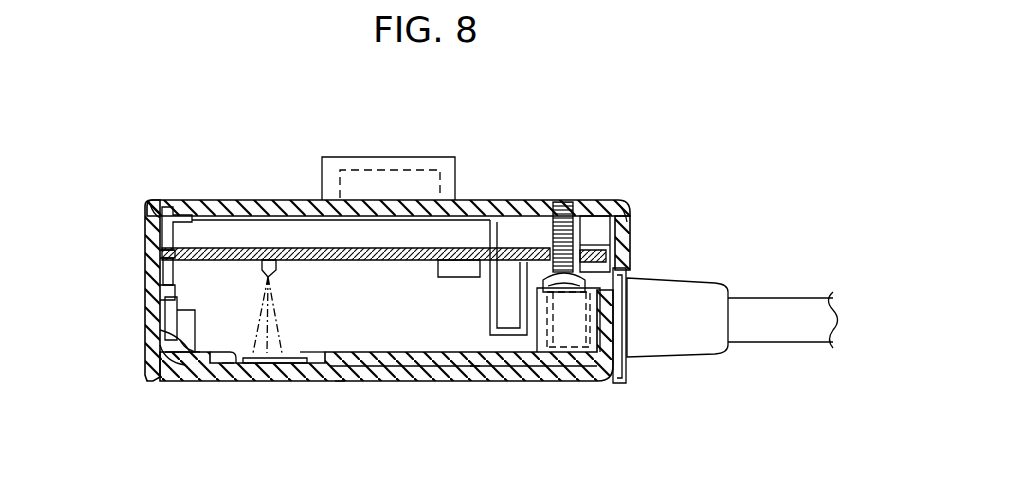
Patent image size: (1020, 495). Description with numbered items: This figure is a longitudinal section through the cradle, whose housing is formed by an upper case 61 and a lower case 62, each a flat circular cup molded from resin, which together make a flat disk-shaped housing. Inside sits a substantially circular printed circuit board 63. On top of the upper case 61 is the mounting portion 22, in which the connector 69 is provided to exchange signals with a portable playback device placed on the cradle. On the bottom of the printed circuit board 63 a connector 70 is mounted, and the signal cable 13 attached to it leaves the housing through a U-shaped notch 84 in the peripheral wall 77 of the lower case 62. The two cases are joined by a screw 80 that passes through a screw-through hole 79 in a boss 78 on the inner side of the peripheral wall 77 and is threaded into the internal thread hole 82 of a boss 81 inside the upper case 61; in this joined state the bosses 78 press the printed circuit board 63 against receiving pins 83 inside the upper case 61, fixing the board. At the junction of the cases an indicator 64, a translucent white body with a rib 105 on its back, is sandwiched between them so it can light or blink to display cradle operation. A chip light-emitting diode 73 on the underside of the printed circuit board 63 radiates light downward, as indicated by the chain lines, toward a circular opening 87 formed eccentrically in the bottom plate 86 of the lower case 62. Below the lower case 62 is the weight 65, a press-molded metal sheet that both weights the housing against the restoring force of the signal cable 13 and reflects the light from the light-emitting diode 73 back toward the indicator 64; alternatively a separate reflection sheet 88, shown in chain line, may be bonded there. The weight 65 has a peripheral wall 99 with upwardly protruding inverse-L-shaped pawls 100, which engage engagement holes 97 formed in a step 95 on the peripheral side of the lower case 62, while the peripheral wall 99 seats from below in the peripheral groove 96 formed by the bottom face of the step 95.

The signal cable 13 is at (773, 323).
The mounting portion 22 is at (413, 157).
The upper case 61 is at (503, 200).
The lower case 62 is at (525, 350).
The printed circuit board 63 is at (228, 248).
The indicator 64 is at (147, 254).
The weight 65 is at (338, 380).
The connector 69 is at (350, 170).
The connector 70 is at (500, 300).
The light-emitting diode 73 is at (265, 258).
The peripheral wall 77 is at (150, 310).
The boss 78 is at (620, 270).
The screw-through hole 79 is at (562, 340).
The screw 80 is at (578, 210).
The boss 81 is at (605, 202).
The internal thread hole 82 is at (557, 205).
The receiving pin 83 is at (140, 214).
The U-shaped notch 84 is at (630, 337).
The bottom plate 86 is at (475, 358).
The circular opening 87 is at (228, 380).
The reflection sheet 88 is at (305, 363).
The step 95 is at (145, 328).
The peripheral groove 96 is at (160, 380).
The engagement hole 97 is at (145, 353).
The peripheral wall 99 is at (187, 380).
The inverse-L-shaped pawl 100 is at (147, 298).
The rib 105 is at (147, 272).